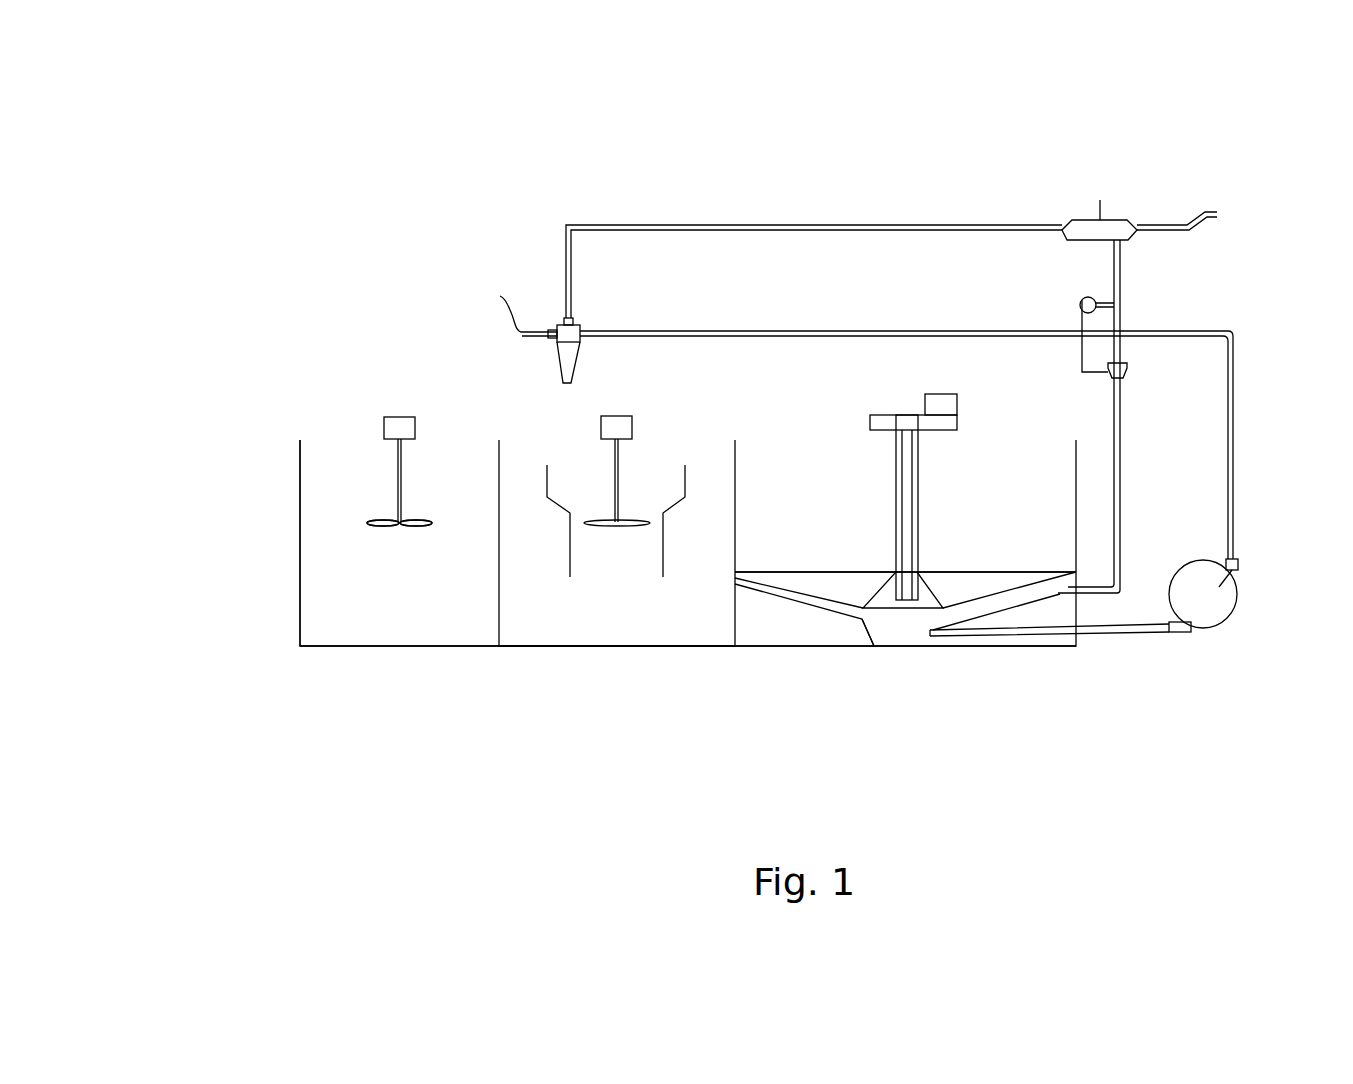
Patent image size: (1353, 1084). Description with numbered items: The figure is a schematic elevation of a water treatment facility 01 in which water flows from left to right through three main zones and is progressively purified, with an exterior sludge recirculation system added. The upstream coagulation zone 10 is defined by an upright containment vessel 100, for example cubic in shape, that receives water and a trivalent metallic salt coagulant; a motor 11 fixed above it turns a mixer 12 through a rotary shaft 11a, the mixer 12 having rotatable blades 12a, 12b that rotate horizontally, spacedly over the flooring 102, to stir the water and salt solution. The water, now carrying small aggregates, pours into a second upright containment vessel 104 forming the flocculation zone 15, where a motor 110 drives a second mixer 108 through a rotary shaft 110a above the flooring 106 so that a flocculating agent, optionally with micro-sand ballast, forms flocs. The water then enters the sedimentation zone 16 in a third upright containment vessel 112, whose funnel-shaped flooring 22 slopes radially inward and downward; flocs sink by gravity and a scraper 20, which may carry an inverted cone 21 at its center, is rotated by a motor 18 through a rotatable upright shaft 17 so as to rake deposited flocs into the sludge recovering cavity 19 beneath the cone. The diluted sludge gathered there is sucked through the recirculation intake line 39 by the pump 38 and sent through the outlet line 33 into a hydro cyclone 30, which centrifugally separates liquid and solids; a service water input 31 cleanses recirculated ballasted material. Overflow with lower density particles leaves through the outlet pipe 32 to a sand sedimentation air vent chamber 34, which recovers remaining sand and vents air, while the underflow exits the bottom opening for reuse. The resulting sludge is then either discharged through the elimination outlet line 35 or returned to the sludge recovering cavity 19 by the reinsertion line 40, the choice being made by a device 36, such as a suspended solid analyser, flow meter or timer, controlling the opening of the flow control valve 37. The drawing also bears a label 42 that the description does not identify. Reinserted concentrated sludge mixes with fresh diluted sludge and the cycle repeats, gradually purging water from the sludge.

The water treatment facility 01 is at (380, 256).
The coagulation zone 10 is at (320, 645).
The motor 11 is at (400, 415).
The rotary shaft 11a is at (400, 478).
The mixer 12 is at (362, 522).
The rotatable blade 12a is at (392, 520).
The rotatable blade 12b is at (410, 525).
The flocculation zone 15 is at (558, 662).
The sedimentation zone 16 is at (765, 648).
The rotatable upright shaft 17 is at (896, 478).
The motor 18 is at (957, 405).
The sludge recovering cavity 19 is at (922, 640).
The scraper 20 is at (848, 596).
The inverted cone 21 is at (938, 578).
The funnel-shaped flooring 22 is at (800, 603).
The hydro cyclone 30 is at (562, 322).
The service water input 31 is at (545, 330).
The outlet pipe 32 is at (573, 243).
The outlet line 33 is at (797, 338).
The sand sedimentation air vent chamber 34 is at (1098, 220).
The elimination outlet line 35 is at (1175, 225).
The controlling device 36 is at (1090, 296).
The flow control valve 37 is at (1105, 377).
The pump 38 is at (1232, 566).
The recirculation intake line 39 is at (1045, 635).
The reinsertion line 40 is at (1114, 550).
The valve 42 is at (1081, 352).
The upright containment vessel 100 is at (296, 622).
The flooring 102 is at (375, 648).
The second upright containment vessel 104 is at (614, 650).
The flooring 106 is at (683, 647).
The second mixer 108 is at (608, 430).
The motor 110 is at (585, 534).
The rotary shaft 110a is at (618, 475).
The upright containment vessel 112 is at (862, 650).